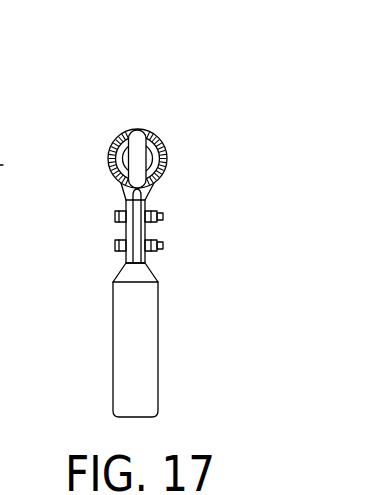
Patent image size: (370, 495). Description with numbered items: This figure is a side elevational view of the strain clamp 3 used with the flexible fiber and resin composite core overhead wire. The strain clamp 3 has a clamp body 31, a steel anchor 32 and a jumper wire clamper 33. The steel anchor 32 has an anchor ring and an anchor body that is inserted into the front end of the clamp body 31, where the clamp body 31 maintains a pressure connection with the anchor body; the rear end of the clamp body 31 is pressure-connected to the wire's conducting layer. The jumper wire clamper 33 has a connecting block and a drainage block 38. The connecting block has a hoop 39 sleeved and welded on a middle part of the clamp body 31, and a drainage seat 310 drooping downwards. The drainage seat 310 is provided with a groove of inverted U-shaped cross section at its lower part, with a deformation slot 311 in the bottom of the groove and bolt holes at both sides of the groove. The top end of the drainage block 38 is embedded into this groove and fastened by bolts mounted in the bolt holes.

The strain clamp 3 is at (163, 124).
The clamp body 31 is at (113, 138).
The hoop 39 is at (164, 147).
The steel anchor 32 is at (130, 175).
The deformation slot 311 is at (147, 196).
The drainage seat 310 is at (119, 231).
The jumper wire clamper 33 is at (101, 306).
The drainage block 38 is at (150, 323).